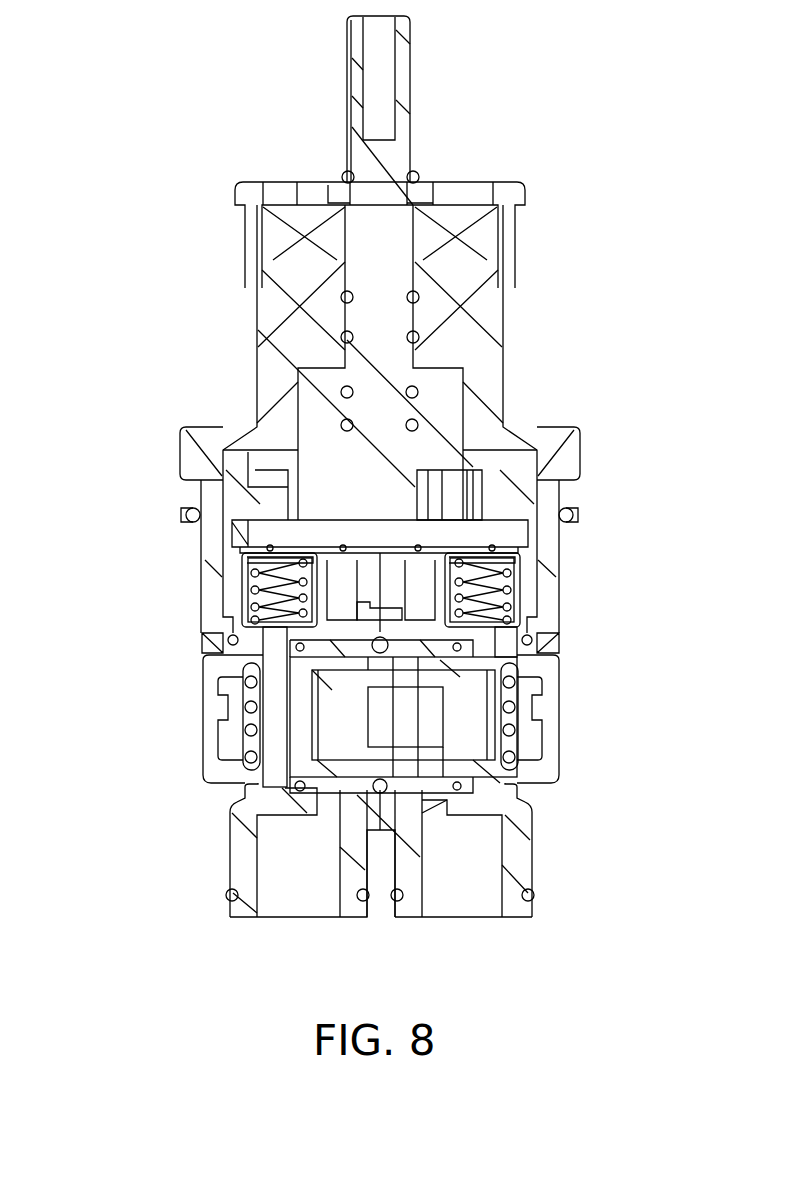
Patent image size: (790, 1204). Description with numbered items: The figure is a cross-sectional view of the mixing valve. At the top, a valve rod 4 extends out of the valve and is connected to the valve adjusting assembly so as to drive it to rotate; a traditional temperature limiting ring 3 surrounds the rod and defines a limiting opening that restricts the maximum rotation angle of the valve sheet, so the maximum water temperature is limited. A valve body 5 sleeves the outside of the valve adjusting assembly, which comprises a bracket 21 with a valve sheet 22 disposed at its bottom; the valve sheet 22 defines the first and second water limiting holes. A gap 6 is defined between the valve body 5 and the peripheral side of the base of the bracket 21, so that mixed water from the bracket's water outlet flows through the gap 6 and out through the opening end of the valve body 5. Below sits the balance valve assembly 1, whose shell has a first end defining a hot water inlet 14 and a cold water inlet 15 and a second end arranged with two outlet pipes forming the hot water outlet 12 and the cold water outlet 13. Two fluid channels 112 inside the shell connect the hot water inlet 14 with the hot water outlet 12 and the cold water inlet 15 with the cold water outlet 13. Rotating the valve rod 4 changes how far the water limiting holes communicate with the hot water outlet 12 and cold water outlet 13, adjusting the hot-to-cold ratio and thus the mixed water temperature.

The balance valve assembly 1 is at (207, 718).
The temperature limiting ring 3 is at (507, 197).
The valve rod 4 is at (402, 83).
The valve body 5 is at (485, 363).
The gap 6 is at (230, 497).
The hot water outlet 12 is at (275, 560).
The cold water outlet 13 is at (490, 562).
The hot water inlet 14 is at (290, 888).
The cold water inlet 15 is at (455, 888).
The bracket 21 is at (427, 460).
The valve sheet 22 is at (380, 547).
The fluid channels 112 is at (323, 712).